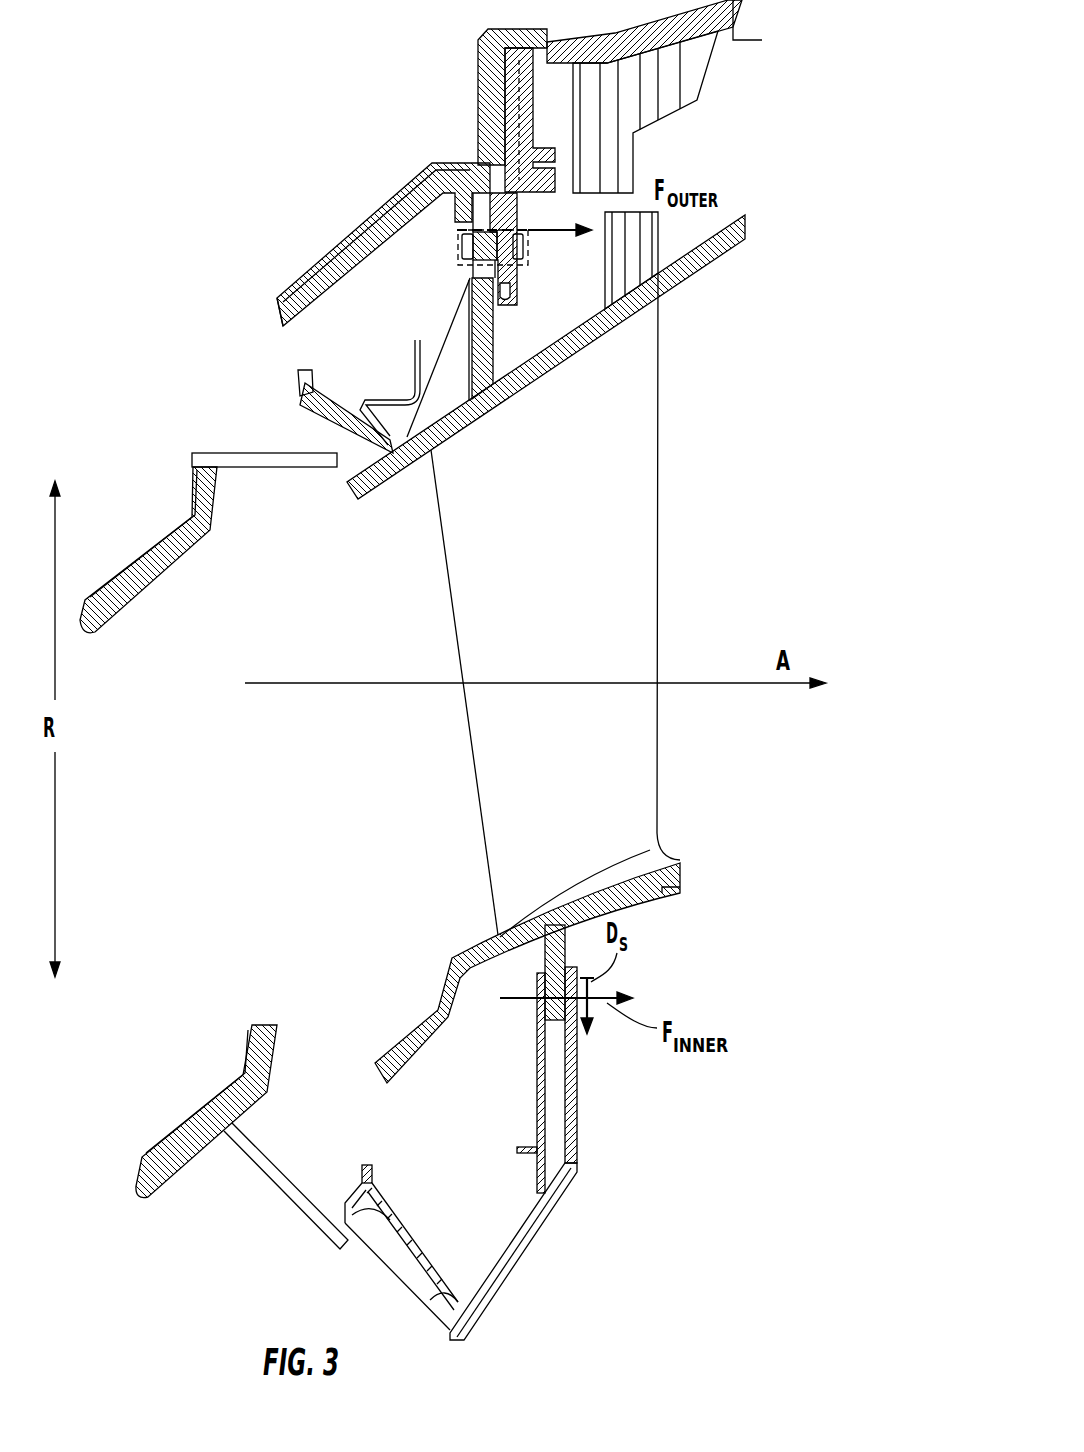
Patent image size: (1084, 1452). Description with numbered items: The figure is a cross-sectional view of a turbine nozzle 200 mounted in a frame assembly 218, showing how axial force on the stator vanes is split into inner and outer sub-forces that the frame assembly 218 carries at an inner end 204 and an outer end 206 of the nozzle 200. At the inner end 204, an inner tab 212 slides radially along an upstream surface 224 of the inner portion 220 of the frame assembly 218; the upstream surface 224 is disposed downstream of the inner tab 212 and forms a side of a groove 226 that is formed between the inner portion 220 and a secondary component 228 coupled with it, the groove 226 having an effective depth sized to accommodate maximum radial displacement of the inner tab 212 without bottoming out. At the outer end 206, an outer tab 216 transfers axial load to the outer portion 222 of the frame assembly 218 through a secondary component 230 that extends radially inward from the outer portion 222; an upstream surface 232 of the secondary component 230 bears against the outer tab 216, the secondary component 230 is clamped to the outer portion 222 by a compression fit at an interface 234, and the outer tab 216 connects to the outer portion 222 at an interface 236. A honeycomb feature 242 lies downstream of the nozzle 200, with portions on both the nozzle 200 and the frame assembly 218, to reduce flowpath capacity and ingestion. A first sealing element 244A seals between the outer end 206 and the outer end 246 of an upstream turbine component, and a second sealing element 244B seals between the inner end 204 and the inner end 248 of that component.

The nozzle 200 is at (648, 495).
The inner end 204 is at (640, 885).
The outer end 206 is at (470, 333).
The inner tab 212 is at (557, 1013).
The outer tab 216 is at (471, 276).
The frame assembly 218 is at (287, 283).
The inner portion 220 is at (572, 1177).
The outer portion 222 is at (407, 197).
The upstream surface 224 is at (575, 1045).
The groove 226 is at (557, 1030).
The secondary component 228 is at (523, 1153).
The secondary component 230 is at (470, 163).
The upstream surface 232 is at (493, 267).
The interface 234 is at (477, 58).
The interface 236 is at (462, 247).
The honeycomb feature 242 is at (697, 100).
The first sealing element 244A is at (263, 468).
The second sealing element 244B is at (273, 1182).
The outer end 246 is at (137, 590).
The inner end 248 is at (180, 1127).